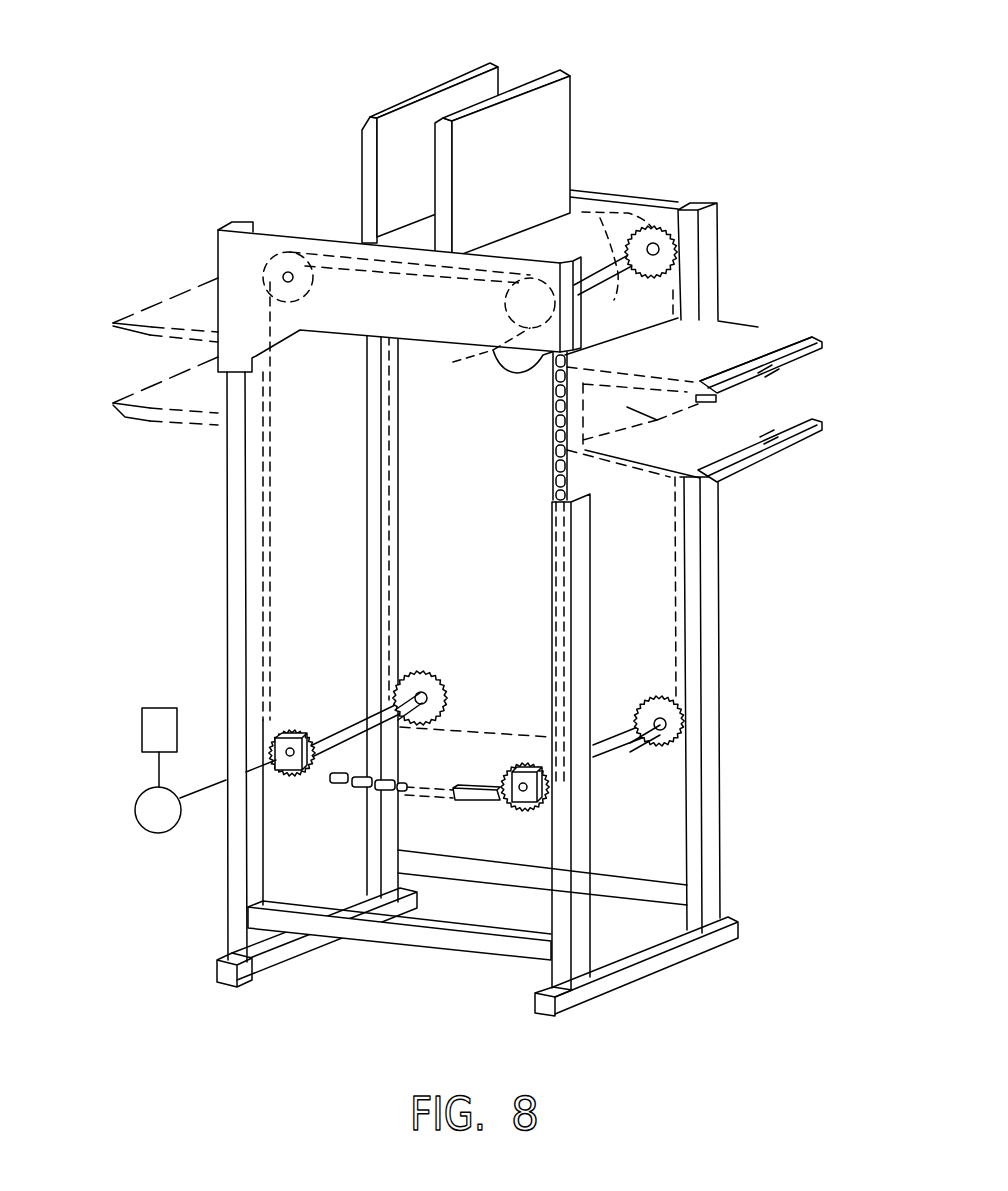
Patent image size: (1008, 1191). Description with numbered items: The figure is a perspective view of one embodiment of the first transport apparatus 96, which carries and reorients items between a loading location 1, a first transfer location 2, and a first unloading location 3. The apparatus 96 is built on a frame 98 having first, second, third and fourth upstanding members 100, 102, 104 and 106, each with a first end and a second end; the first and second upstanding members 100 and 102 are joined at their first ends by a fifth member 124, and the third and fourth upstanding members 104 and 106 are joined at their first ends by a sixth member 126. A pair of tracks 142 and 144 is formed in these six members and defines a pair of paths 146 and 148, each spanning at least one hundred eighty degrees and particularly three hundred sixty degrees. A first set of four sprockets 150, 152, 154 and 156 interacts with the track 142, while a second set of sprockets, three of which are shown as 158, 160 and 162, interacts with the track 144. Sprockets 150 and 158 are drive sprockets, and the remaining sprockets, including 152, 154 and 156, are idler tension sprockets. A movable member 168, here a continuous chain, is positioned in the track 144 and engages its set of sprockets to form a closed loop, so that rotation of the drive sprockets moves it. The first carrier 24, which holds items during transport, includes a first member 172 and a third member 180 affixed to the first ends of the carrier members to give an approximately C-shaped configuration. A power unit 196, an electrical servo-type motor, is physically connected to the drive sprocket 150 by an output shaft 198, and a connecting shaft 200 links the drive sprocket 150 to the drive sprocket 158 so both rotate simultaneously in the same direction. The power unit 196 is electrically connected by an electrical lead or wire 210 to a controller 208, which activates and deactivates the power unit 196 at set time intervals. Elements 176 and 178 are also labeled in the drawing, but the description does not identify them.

The loading location 1 is at (112, 374).
The first transfer location 2 is at (538, 63).
The first unloading location 3 is at (818, 395).
The first carrier 24 is at (797, 452).
The first transport apparatus 96 is at (713, 80).
The frame 98 is at (200, 222).
The first upstanding member 100 is at (227, 617).
The second upstanding member 102 is at (592, 663).
The third upstanding member 104 is at (719, 677).
The fourth upstanding member 106 is at (397, 470).
The fifth member 124 is at (523, 258).
The sixth member 126 is at (622, 198).
The track 142 is at (443, 790).
The track 144 is at (472, 727).
The path 146 is at (363, 793).
The path 148 is at (525, 727).
The drive sprocket 150 is at (283, 780).
The idler tension sprocket 152 is at (538, 810).
The idler tension sprocket 154 is at (482, 354).
The idler tension sprocket 156 is at (311, 282).
The drive sprocket 158 is at (418, 672).
The sprocket 160 is at (658, 710).
The sprocket 162 is at (675, 256).
The movable member 168 is at (616, 293).
The first member 172 is at (813, 332).
The fork arm 176 is at (773, 337).
The lift chain 178 is at (547, 463).
The third member 180 is at (657, 420).
The power unit 196 is at (153, 840).
The output shaft 198 is at (287, 752).
The connecting shaft 200 is at (350, 713).
The controller 208 is at (170, 708).
The electrical lead or wire 210 is at (157, 768).